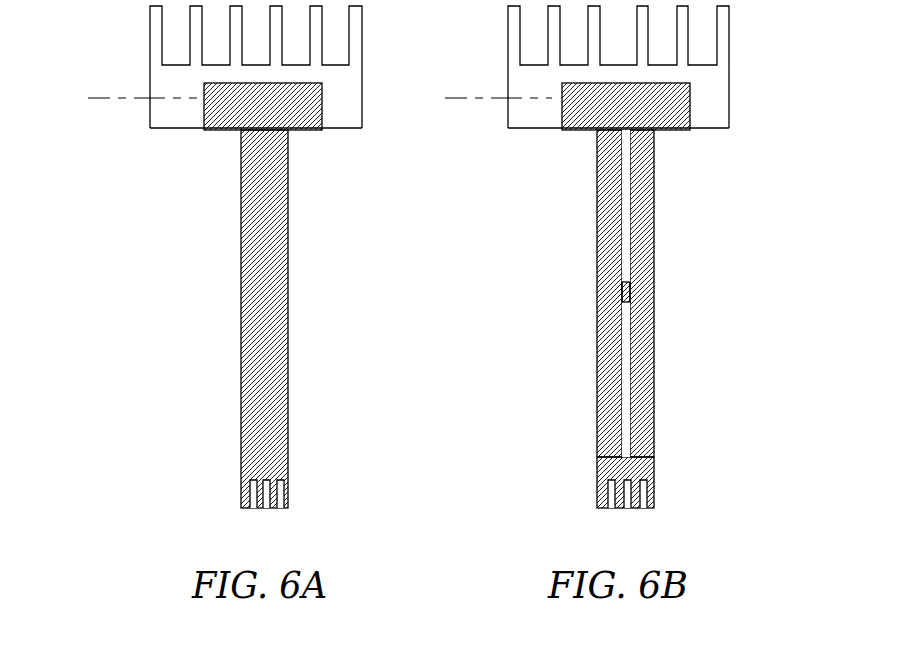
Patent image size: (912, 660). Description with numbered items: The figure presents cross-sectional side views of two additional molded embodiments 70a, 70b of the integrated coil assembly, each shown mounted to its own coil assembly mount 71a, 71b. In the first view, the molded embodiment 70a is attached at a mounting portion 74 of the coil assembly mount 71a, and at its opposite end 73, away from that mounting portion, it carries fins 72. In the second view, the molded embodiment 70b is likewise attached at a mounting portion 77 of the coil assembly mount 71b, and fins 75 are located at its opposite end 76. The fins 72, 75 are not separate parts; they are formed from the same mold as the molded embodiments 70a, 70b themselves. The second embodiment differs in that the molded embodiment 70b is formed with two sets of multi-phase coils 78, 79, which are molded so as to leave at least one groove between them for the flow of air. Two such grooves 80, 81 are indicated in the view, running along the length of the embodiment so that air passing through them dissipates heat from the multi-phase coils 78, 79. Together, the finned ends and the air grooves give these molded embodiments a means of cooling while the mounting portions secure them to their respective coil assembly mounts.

In FIG. 6A, the molded embodiment 70a is at (204, 257).
In FIG. 6A, the coil assembly mount 71a is at (201, 95).
In FIG. 6A, the mounting portion 74 is at (168, 118).
In FIG. 6A, the opposite end 73 is at (304, 319).
In FIG. 6A, the fins 72 is at (282, 500).
In FIG. 6B, the molded embodiment 70b is at (630, 257).
In FIG. 6B, the coil assembly mount 71b is at (645, 95).
In FIG. 6B, the mounting portion 77 is at (532, 120).
In FIG. 6B, the opposite end 76 is at (638, 319).
In FIG. 6B, the multi-phase coils 78 is at (600, 263).
In FIG. 6B, the groove 80 is at (623, 215).
In FIG. 6B, the multi-phase coils 79 is at (652, 297).
In FIG. 6B, the groove 81 is at (628, 382).
In FIG. 6B, the fins 75 is at (645, 490).